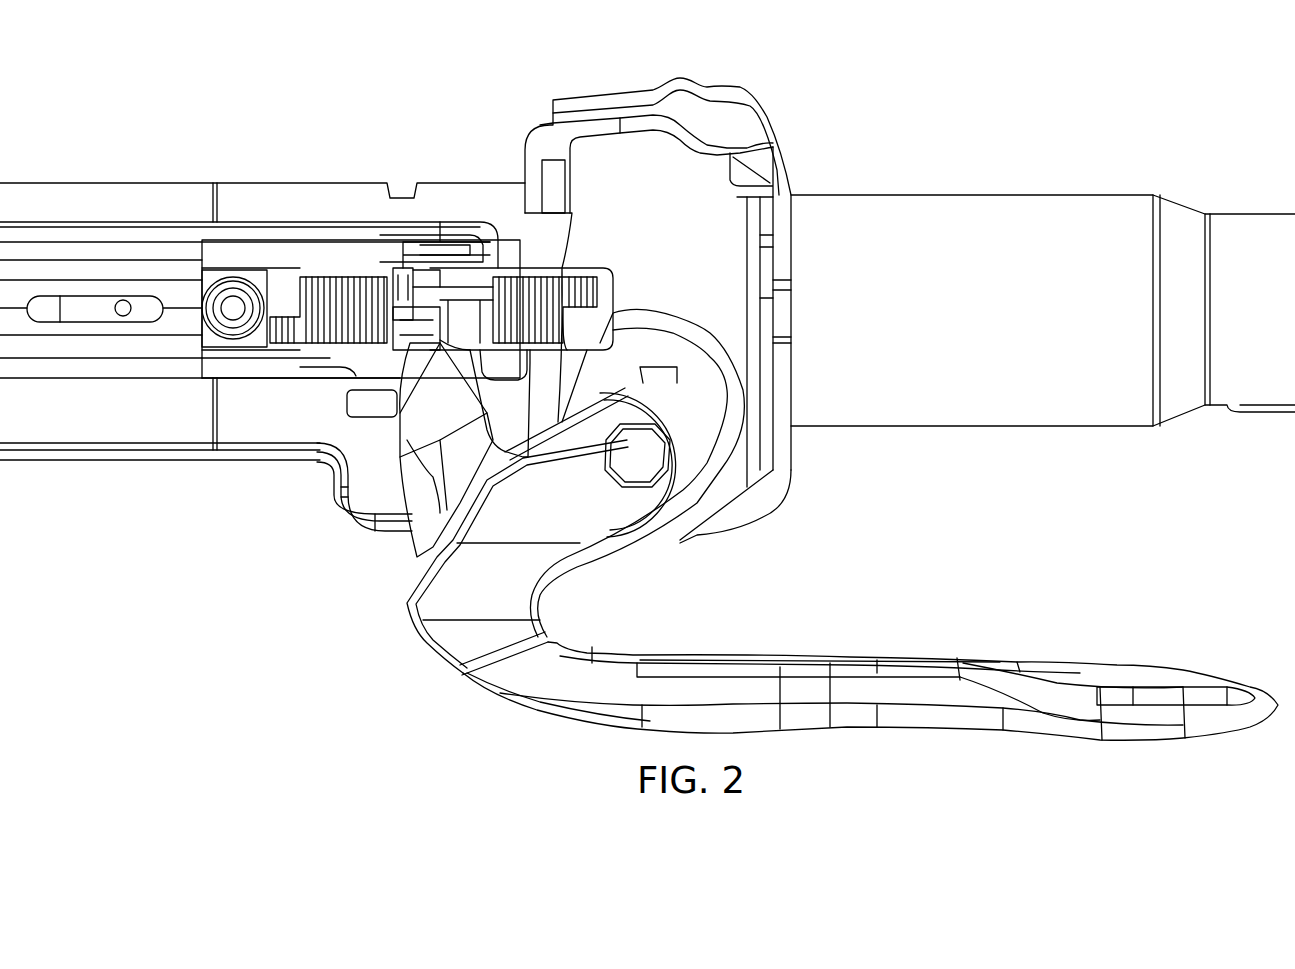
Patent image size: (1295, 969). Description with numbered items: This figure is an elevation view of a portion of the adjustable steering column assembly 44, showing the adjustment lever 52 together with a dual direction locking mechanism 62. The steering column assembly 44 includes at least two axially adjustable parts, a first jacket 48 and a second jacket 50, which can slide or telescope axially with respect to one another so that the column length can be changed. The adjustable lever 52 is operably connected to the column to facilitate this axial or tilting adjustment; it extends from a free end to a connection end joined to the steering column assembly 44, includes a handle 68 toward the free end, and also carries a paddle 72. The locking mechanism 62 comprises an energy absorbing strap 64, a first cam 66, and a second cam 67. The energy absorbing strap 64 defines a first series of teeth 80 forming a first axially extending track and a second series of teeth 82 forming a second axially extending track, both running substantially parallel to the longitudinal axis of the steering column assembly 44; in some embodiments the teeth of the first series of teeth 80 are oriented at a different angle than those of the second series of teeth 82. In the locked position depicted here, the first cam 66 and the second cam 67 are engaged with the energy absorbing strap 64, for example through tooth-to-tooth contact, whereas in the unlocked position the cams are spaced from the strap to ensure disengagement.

The steering column assembly 44 is at (253, 105).
The first jacket 48 is at (990, 238).
The second jacket 50 is at (47, 198).
The adjustable lever 52 is at (830, 675).
The dual direction locking mechanism 62 is at (398, 235).
The energy absorbing strap 64 is at (273, 285).
The first cam 66 is at (397, 275).
The second cam 67 is at (393, 322).
The handle 68 is at (1123, 695).
The paddle 72 is at (443, 400).
The first series of teeth 80 is at (533, 273).
The second series of teeth 82 is at (322, 345).